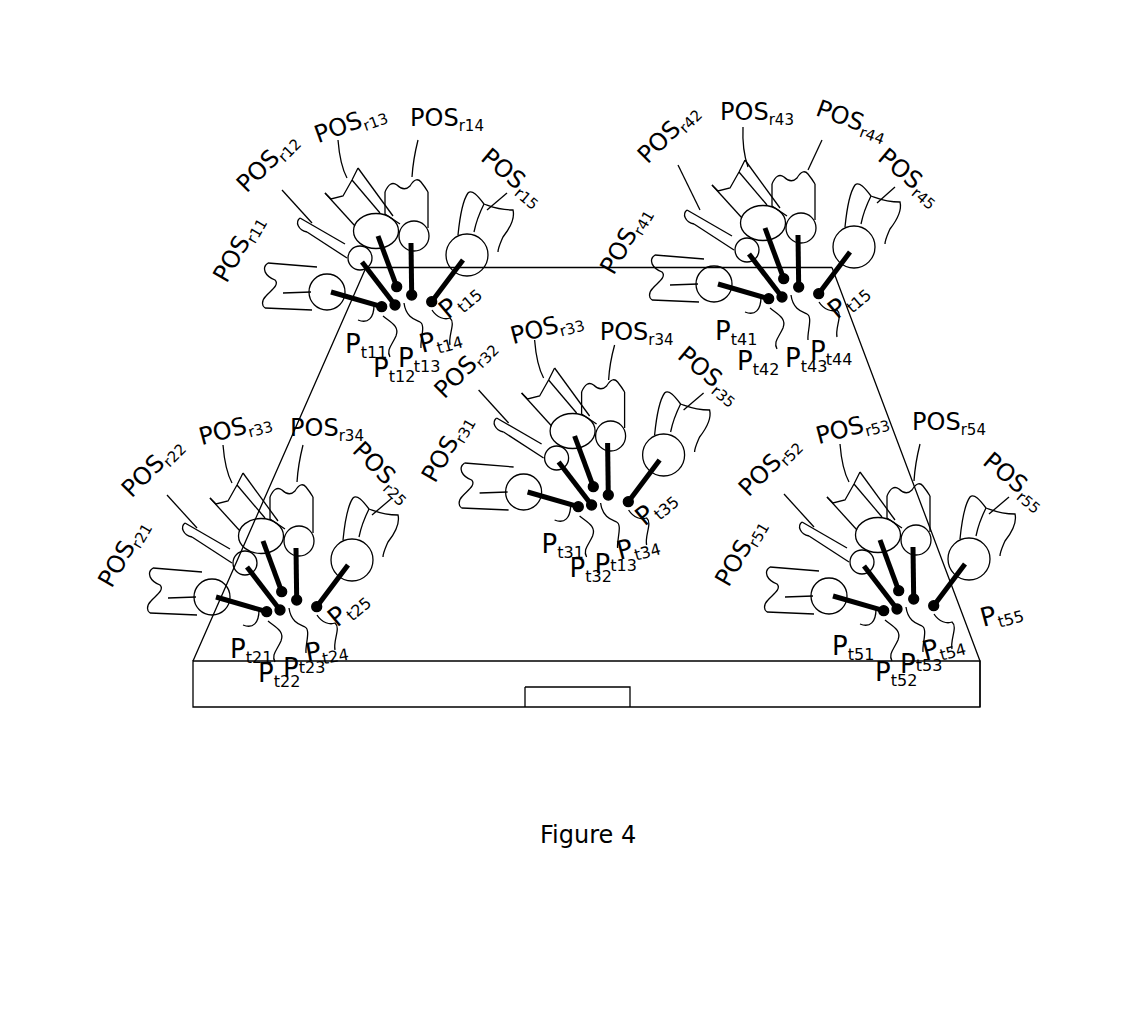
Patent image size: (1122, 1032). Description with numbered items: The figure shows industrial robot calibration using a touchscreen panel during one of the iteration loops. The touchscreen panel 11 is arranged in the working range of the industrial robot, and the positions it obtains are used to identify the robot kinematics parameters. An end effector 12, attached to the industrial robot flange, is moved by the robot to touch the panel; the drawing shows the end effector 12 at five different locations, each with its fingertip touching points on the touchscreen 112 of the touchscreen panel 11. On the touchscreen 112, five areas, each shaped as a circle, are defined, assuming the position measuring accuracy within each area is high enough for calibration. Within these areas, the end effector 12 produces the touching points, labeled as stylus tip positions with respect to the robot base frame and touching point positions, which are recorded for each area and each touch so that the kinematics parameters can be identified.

The touchscreen panel 11 is at (485, 697).
The end effector 12 is at (272, 309).
The touchscreen 112 is at (982, 659).